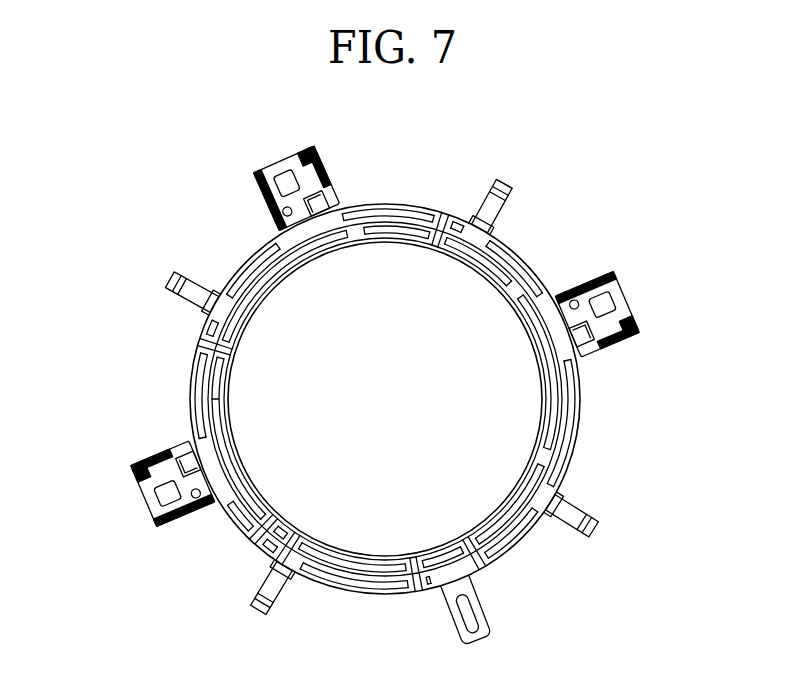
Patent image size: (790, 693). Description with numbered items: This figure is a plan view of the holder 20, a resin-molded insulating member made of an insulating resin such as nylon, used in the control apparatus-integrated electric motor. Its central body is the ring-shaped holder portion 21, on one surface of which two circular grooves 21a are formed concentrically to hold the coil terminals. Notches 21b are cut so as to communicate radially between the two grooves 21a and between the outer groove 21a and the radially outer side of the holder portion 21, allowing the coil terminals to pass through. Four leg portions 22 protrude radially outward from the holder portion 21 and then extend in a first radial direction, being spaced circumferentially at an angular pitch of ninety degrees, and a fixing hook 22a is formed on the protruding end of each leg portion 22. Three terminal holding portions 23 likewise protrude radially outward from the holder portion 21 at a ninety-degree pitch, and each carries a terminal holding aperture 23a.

The holder 20 is at (168, 108).
The holder portion 21 is at (443, 401).
The grooves 21a is at (353, 235).
The notches 21b is at (566, 418).
The leg portions 22 is at (512, 203).
The fixing hook 22a is at (507, 183).
The terminal holding portions 23 is at (385, 336).
The terminal holding aperture 23a is at (334, 203).